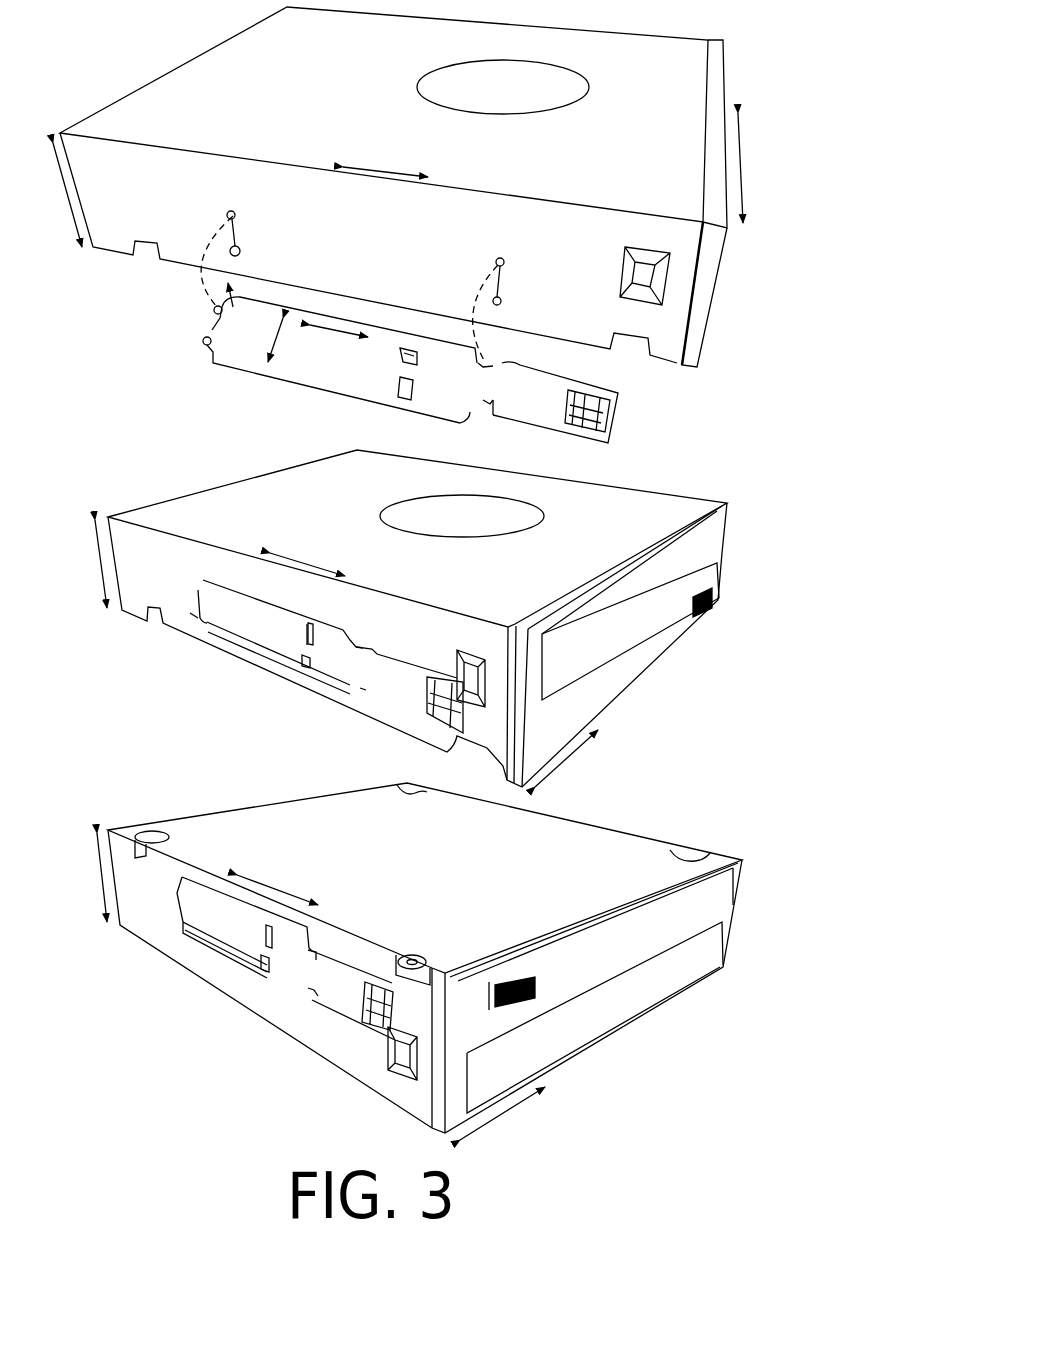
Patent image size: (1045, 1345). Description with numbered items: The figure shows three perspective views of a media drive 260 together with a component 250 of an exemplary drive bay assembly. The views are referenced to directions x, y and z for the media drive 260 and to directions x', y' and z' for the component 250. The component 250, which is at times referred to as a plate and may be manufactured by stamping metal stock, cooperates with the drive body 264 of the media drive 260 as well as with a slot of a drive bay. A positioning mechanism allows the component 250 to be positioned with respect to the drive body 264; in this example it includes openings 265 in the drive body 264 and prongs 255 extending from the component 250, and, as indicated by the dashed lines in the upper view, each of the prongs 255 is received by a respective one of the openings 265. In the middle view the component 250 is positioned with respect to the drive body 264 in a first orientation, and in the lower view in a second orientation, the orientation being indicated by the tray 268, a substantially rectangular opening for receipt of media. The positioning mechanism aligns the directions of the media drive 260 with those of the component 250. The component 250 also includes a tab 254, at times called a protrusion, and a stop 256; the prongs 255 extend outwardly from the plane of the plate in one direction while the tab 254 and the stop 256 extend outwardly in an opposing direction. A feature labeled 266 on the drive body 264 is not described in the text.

The component 250 is at (252, 371).
The tab 254 is at (400, 370).
The prongs 255 is at (205, 341).
The stop 256 is at (600, 412).
The media drive 260 is at (148, 58).
The drive body 264 is at (125, 107).
The openings 265 is at (227, 213).
The indicator 266 is at (712, 608).
The tray 268 is at (582, 655).